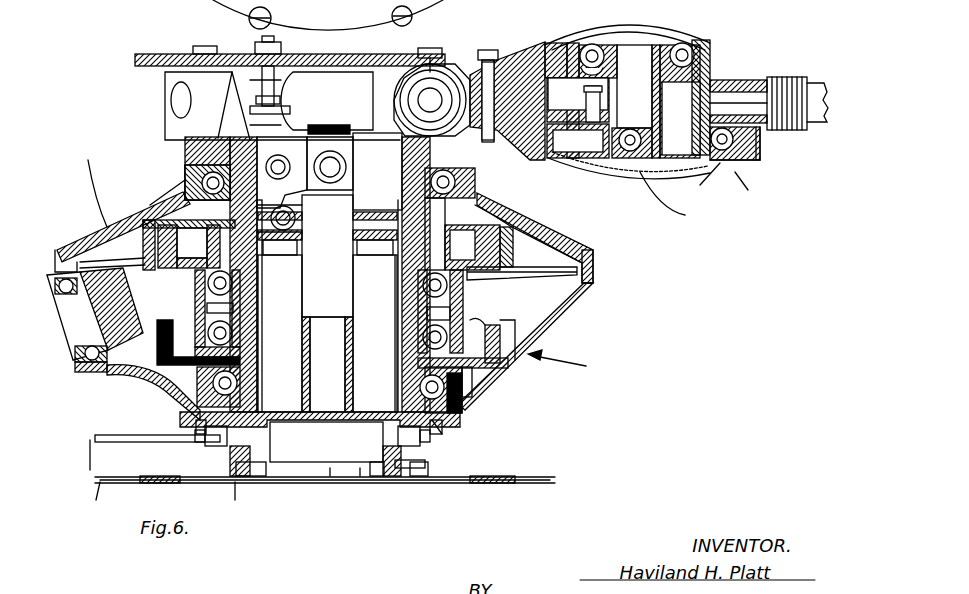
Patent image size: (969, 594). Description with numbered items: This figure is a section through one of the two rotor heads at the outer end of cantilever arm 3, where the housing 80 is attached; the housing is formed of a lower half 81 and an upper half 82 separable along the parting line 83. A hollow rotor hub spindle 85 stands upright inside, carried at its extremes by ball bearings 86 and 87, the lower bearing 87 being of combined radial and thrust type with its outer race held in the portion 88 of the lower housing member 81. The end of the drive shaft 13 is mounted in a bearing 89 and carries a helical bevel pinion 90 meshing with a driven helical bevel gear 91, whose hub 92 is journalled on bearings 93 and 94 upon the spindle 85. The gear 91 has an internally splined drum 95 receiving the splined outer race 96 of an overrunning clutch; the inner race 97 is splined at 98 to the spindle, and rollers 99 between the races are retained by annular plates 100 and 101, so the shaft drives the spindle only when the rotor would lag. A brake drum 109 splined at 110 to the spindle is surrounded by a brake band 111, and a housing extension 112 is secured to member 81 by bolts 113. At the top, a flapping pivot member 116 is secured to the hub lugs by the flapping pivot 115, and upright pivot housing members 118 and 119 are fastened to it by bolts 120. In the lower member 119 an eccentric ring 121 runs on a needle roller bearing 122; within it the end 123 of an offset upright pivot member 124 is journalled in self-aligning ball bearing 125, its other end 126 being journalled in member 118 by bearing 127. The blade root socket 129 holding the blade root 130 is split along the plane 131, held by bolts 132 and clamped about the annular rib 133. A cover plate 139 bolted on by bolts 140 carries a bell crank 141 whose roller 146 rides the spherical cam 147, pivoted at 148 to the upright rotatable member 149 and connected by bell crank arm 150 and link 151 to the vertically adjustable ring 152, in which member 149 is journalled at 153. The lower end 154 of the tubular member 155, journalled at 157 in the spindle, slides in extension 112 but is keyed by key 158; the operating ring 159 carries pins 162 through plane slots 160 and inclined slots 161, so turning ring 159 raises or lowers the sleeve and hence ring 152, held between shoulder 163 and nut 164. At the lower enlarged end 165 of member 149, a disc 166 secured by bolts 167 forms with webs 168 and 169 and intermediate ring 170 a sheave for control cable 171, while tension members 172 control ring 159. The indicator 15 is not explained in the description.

The cantilever arm 3 is at (82, 428).
The drive shaft 13 is at (58, 300).
The section plane 15 is at (612, 386).
The housing 80 is at (150, 370).
The lower housing half 81 is at (585, 322).
The upper housing half 82 is at (530, 212).
The parting line 83 is at (598, 271).
The rotor hub spindle 85 is at (463, 310).
The ball bearing 86 is at (475, 183).
The lower bearing 87 is at (462, 398).
The portion of lower housing member 88 is at (470, 383).
The bearing 89 is at (60, 248).
The helical bevel pinion 90 is at (128, 292).
The driven helical bevel gear 91 is at (90, 185).
The gear hub 92 is at (205, 312).
The ball bearing 93 is at (228, 284).
The ball bearing 94 is at (228, 334).
The internally splined cylindrical flange or drum 95 is at (592, 242).
The outer race 96 is at (640, 176).
The inner race 97 is at (170, 205).
The spline 98 is at (185, 205).
The clutch rollers 99 is at (135, 200).
The annular plate 100 is at (458, 228).
The annular plate 101 is at (470, 281).
The brake drum 109 is at (486, 322).
The spline 110 is at (252, 362).
The brake band 111 is at (518, 345).
The housing extension 112 is at (235, 482).
The bolts 113 is at (198, 430).
The flapping pivot 115 is at (444, 90).
The flapping pivot member 116 is at (512, 145).
The upright pivot housing member 118 is at (600, 36).
The upright pivot housing member 119 is at (570, 166).
The bolts 120 is at (572, 48).
The eccentric ring 121 is at (775, 196).
The needle type roller bearing 122 is at (760, 150).
The end of offset pivot member 123 is at (708, 182).
The offset upright pivot member 124 is at (710, 80).
The self-aligning ball bearing 125 is at (748, 190).
The other end of offset pivot member 126 is at (662, 58).
The self-aligning ball bearing 127 is at (700, 58).
The blade root socket 129 is at (740, 97).
The blade root 130 is at (815, 90).
The median plane line 131 is at (768, 126).
The bolts 132 is at (578, 100).
The annular rib 133 is at (755, 78).
The cover plate 139 is at (135, 58).
The bolts 140 is at (205, 48).
The bell crank member 141 is at (352, 72).
The roller 146 is at (264, 42).
The spherical cam member 147 is at (352, 125).
The pivot 148 is at (346, 166).
The upright rotatable member 149 is at (348, 282).
The bell crank arm 150 is at (280, 184).
The link 151 is at (327, 256).
The vertically adjustable ring 152 is at (278, 245).
The journal 153 is at (302, 245).
The lower end of tubular member 154 is at (388, 404).
The tubular member 155 is at (395, 352).
The journal 157 is at (398, 198).
The key 158 is at (258, 482).
The operating ring 159 is at (426, 464).
The elongated slots 160 is at (242, 462).
The inclined slots 161 is at (380, 470).
The pin members 162 is at (225, 440).
The shoulder 163 is at (396, 238).
The threaded retaining ring or nut 164 is at (396, 232).
The lower enlarged end 165 is at (320, 437).
The ring or disc 166 is at (360, 468).
The bolts 167 is at (330, 468).
The web 168 is at (455, 482).
The web 169 is at (450, 483).
The intermediate ring 170 is at (555, 480).
The control cable 171 is at (100, 482).
The tension members 172 is at (105, 440).